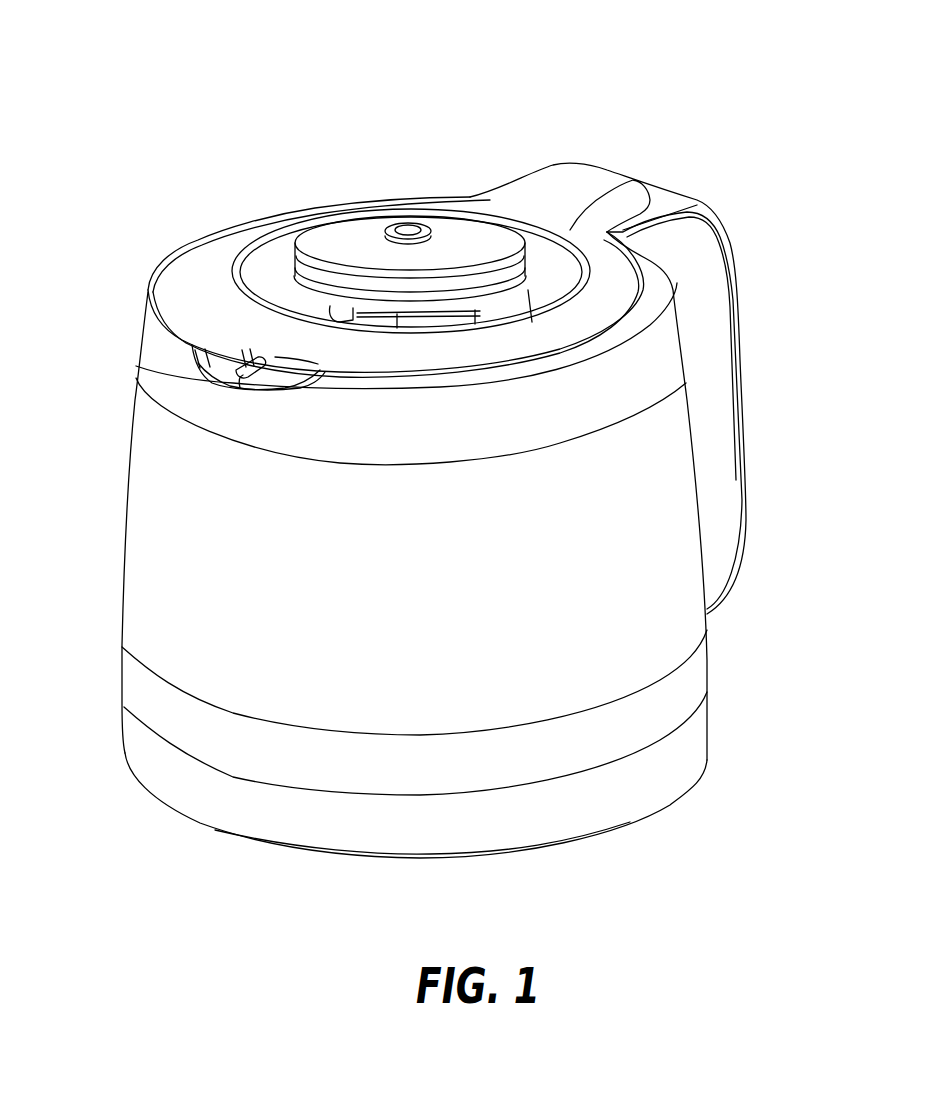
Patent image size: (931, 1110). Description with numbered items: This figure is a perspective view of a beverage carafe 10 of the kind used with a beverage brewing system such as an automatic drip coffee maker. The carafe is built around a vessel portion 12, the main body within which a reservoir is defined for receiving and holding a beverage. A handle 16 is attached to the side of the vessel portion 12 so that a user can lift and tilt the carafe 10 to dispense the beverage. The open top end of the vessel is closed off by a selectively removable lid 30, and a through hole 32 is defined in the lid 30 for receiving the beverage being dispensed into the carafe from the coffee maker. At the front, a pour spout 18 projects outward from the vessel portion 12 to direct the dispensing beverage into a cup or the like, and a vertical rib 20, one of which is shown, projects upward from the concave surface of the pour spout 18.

The beverage carafe 10 is at (580, 66).
The vessel portion 12 is at (148, 530).
The handle 16 is at (712, 307).
The pour spout 18 is at (215, 365).
The vertical rib 20 is at (240, 388).
The lid 30 is at (270, 233).
The through hole 32 is at (407, 226).